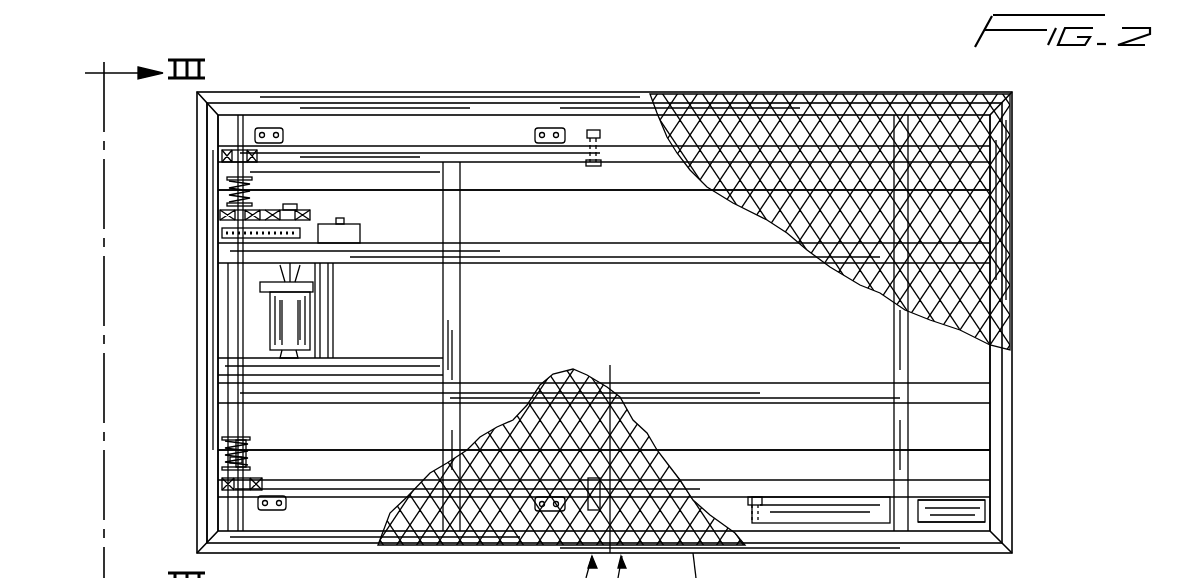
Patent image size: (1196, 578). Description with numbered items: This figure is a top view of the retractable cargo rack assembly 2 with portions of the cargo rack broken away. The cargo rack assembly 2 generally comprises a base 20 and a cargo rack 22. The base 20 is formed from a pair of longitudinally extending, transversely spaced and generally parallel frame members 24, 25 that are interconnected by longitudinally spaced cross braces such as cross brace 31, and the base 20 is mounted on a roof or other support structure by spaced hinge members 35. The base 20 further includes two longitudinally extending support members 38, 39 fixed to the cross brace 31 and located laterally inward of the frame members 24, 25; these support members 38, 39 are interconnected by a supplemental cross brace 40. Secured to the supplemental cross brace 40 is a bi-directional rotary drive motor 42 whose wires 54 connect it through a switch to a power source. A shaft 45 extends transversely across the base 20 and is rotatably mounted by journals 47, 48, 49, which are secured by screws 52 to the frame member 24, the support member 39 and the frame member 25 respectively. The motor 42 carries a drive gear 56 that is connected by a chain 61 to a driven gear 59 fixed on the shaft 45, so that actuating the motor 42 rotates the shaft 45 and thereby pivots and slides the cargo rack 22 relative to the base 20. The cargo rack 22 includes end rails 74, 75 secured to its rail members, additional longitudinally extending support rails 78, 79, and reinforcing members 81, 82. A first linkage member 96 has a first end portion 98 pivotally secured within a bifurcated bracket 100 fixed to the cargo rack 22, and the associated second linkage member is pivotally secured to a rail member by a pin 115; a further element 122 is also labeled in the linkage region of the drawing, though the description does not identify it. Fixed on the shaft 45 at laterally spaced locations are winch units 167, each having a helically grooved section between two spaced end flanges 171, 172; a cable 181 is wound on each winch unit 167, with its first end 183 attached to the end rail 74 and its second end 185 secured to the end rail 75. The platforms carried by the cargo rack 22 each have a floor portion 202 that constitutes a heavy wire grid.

The cargo rack assembly 2 is at (1022, 192).
The base 20 is at (463, 306).
The cargo rack 22 is at (202, 342).
The frame member 24 is at (332, 487).
The frame member 25 is at (482, 163).
The cross brace 31 is at (458, 350).
The hinge member 35 is at (550, 127).
The support member 38 is at (402, 368).
The support member 39 is at (393, 244).
The supplemental cross brace 40 is at (321, 343).
The bi-directional rotary drive motor 42 is at (295, 318).
The shaft 45 is at (228, 300).
The journal 47 is at (224, 486).
The journal 48 is at (228, 214).
The journal 49 is at (222, 152).
The screw 52 is at (268, 152).
The wire 54 is at (272, 355).
The drive gear 56 is at (357, 245).
The driven gear 59 is at (228, 233).
The chain 61 is at (262, 232).
The end rail 74 is at (1002, 372).
The end rail 75 is at (206, 426).
The support rail 78 is at (688, 394).
The support rail 79 is at (628, 248).
The reinforcing member 81 is at (908, 420).
The reinforcing member 82 is at (900, 212).
The first linkage member 96 is at (712, 500).
The first end portion 98 is at (965, 522).
The bifurcated bracket 100 is at (970, 500).
The pin 115 is at (595, 168).
The bolt 122 is at (780, 498).
The winch unit 167 is at (226, 190).
The end flange 171 is at (248, 461).
The end flange 172 is at (250, 440).
The cable 181 is at (620, 190).
The first end 183 is at (980, 452).
The second end 185 is at (228, 451).
The floor portion 202 is at (570, 376).